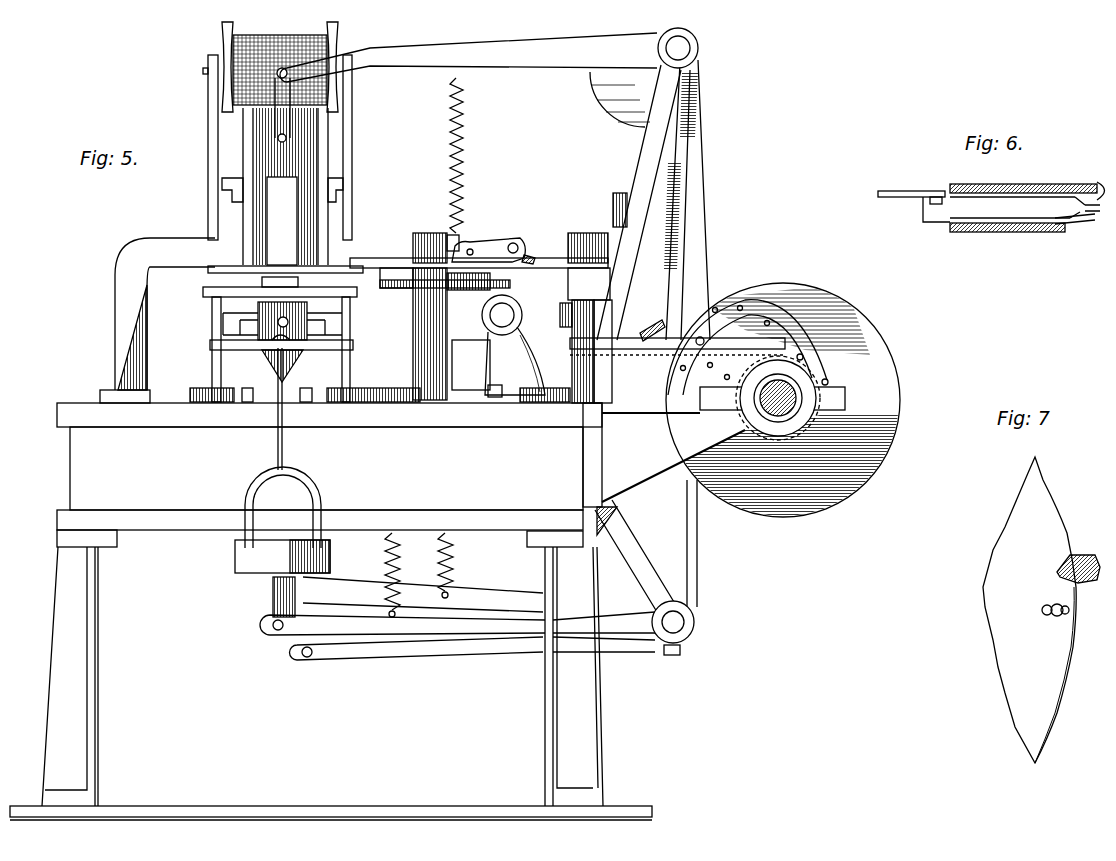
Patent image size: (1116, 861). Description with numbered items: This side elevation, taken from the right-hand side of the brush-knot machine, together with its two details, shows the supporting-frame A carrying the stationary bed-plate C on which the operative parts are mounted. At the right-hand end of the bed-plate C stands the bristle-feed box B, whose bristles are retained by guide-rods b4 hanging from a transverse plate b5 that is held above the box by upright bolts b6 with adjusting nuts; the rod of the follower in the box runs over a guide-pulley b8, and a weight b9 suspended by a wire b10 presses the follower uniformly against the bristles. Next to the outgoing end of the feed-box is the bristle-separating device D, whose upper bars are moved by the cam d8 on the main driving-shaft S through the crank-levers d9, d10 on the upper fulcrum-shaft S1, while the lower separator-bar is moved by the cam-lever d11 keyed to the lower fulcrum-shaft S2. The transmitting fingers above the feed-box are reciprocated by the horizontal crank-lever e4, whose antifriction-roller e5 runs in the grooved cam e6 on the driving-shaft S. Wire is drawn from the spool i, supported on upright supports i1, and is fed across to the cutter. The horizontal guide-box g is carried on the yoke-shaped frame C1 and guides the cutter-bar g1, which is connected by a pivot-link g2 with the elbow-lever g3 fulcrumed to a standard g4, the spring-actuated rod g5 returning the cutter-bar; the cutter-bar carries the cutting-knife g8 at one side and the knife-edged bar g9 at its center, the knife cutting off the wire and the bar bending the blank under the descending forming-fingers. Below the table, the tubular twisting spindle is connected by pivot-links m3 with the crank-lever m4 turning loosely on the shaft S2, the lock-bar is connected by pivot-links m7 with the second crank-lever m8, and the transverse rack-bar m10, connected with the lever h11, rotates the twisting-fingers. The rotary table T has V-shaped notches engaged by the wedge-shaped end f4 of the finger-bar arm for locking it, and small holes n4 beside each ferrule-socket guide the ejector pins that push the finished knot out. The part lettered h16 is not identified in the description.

In FIG. 5, the supporting-frame A is at (331, 623).
In FIG. 5, the stationary bed-plate C is at (623, 427).
In FIG. 5, the yoke-shaped frame C1 is at (118, 323).
In FIG. 5, the spool i is at (280, 62).
In FIG. 5, the upright supports i1 is at (210, 163).
In FIG. 5, the bristle-separating device D is at (284, 221).
In FIG. 5, the crank-lever d9 is at (390, 52).
In FIG. 5, the crank-lever d10 is at (540, 66).
In FIG. 5, the upper fulcrum-shaft S1 is at (678, 48).
In FIG. 5, the lower fulcrum-shaft S2 is at (673, 622).
In FIG. 5, the horizontal guide-box g is at (393, 249).
In FIG. 6, the horizontal guide-box g is at (1022, 186).
In FIG. 5, the cutter-bar g1 is at (458, 244).
In FIG. 6, the cutter-bar g1 is at (1003, 220).
In FIG. 5, the pivot-link g2 is at (487, 248).
In FIG. 6, the pivot-link g2 is at (914, 194).
In FIG. 5, the elbow-lever g3 is at (528, 255).
In FIG. 5, the standard g4 is at (513, 345).
In FIG. 5, the spring-actuated rod g5 is at (445, 292).
In FIG. 6, the cutting-knife g8 is at (1081, 223).
In FIG. 6, the knife-edged bar g9 is at (1092, 178).
In FIG. 5, the rocking lever h11 is at (508, 385).
In FIG. 5, the link h16 is at (277, 611).
In FIG. 5, the transverse plate b5 is at (204, 293).
In FIG. 5, the bristle-feed box B is at (243, 317).
In FIG. 5, the upright bolts b6 is at (210, 374).
In FIG. 5, the guide-rods b4 is at (273, 338).
In FIG. 5, the guide-pulley b8 is at (287, 333).
In FIG. 5, the wire b10 is at (283, 433).
In FIG. 5, the weight b9 is at (267, 553).
In FIG. 5, the pivot-links m3 is at (423, 588).
In FIG. 5, the crank-lever m4 is at (423, 599).
In FIG. 5, the pivot-links m7 is at (293, 641).
In FIG. 5, the second crank-lever m8 is at (423, 650).
In FIG. 5, the transverse rack-bar m10 is at (188, 395).
In FIG. 5, the intermediate cam-lever d11 is at (706, 562).
In FIG. 5, the main driving-shaft S is at (780, 393).
In FIG. 5, the cam d8 is at (757, 318).
In FIG. 5, the horizontal crank-lever e4 is at (389, 247).
In FIG. 5, the antifriction-roller e5 is at (802, 357).
In FIG. 5, the grooved cam e6 is at (827, 380).
In FIG. 7, the rotary table T is at (1003, 613).
In FIG. 7, the wedge-shaped end f4 is at (1087, 555).
In FIG. 7, the small holes n4 is at (1043, 609).